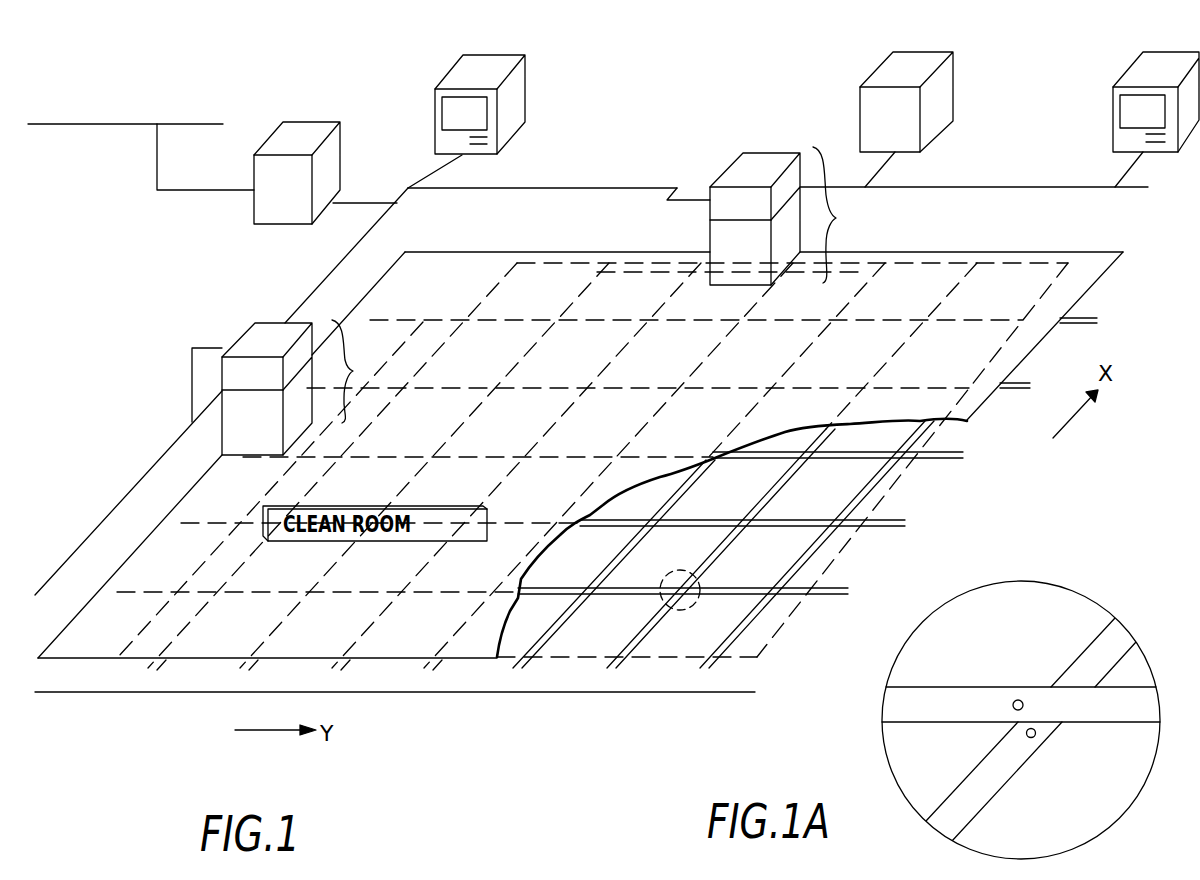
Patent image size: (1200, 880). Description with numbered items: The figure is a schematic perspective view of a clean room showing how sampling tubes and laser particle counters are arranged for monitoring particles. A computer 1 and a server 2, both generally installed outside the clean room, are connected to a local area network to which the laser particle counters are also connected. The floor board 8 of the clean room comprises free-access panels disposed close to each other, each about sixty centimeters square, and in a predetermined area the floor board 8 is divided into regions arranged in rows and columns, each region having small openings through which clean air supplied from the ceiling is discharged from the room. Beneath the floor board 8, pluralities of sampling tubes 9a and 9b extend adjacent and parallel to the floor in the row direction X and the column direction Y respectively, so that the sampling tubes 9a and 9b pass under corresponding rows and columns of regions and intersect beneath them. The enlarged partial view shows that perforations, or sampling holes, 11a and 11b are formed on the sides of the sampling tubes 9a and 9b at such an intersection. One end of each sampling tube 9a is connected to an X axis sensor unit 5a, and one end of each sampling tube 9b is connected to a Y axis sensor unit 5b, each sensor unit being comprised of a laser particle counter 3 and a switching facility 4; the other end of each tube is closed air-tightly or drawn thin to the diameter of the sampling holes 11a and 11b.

In FIG. 1, the computer 1 is at (467, 80).
In FIG. 1, the server 2 is at (273, 136).
In FIG. 1, the laser particle counter 3 is at (743, 160).
In FIG. 1, the switching facility 4 is at (297, 424).
In FIG. 1, the X axis sensor unit 5a is at (845, 215).
In FIG. 1, the Y axis sensor unit 5b is at (362, 371).
In FIG. 1, the floor board 8 is at (62, 660).
In FIG. 1, the sampling tube (X direction) 9a is at (547, 640).
In FIG. 1A, the sampling tube (X direction) 9a is at (998, 793).
In FIG. 1, the sampling tube (Y direction) 9b is at (945, 458).
In FIG. 1A, the sampling tube (Y direction) 9b is at (928, 723).
In FIG. 1A, the perforation (sampling hole) 11a is at (1036, 735).
In FIG. 1A, the perforation (sampling hole) 11b is at (1018, 700).